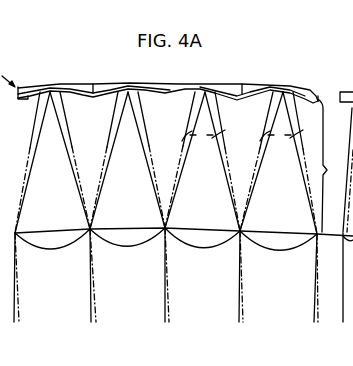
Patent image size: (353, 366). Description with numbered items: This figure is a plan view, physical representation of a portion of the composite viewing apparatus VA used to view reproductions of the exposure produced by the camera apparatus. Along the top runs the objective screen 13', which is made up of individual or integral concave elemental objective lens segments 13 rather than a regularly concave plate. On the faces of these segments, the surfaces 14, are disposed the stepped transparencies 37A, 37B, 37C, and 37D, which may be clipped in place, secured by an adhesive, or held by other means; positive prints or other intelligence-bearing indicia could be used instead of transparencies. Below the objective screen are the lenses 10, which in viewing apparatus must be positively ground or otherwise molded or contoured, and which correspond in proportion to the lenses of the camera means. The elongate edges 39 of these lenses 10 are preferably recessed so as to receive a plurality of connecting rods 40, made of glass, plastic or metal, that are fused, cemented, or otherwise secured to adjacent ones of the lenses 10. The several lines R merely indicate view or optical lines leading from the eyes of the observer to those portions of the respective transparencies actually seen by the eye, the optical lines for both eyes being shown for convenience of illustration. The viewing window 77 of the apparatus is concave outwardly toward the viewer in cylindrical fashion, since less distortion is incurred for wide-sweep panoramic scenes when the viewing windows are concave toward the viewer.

The objective lens segment 13 is at (185, 79).
The objective screen 13' is at (7, 75).
The surface 14 is at (24, 90).
The stepped transparency 37A is at (55, 88).
The stepped transparency 37B is at (134, 90).
The stepped transparency 37C is at (208, 90).
The stepped transparency 37D is at (250, 95).
The lens 10 is at (40, 228).
The elongate edge 39 is at (163, 237).
The connecting rod 40 is at (88, 240).
The viewing window 77 is at (283, 244).
The optical line R is at (242, 135).
The viewing apparatus VA is at (331, 165).